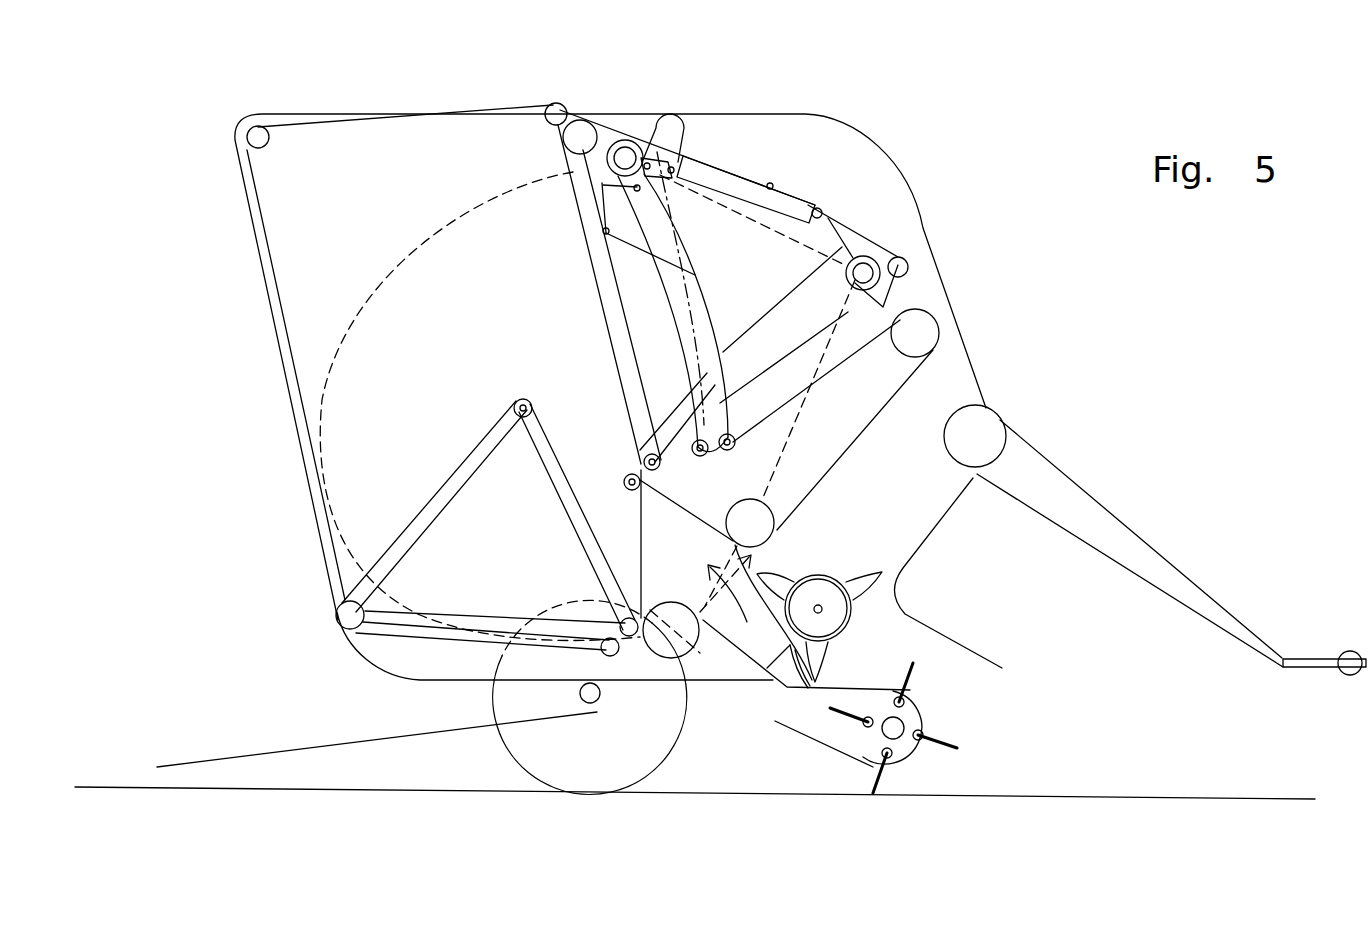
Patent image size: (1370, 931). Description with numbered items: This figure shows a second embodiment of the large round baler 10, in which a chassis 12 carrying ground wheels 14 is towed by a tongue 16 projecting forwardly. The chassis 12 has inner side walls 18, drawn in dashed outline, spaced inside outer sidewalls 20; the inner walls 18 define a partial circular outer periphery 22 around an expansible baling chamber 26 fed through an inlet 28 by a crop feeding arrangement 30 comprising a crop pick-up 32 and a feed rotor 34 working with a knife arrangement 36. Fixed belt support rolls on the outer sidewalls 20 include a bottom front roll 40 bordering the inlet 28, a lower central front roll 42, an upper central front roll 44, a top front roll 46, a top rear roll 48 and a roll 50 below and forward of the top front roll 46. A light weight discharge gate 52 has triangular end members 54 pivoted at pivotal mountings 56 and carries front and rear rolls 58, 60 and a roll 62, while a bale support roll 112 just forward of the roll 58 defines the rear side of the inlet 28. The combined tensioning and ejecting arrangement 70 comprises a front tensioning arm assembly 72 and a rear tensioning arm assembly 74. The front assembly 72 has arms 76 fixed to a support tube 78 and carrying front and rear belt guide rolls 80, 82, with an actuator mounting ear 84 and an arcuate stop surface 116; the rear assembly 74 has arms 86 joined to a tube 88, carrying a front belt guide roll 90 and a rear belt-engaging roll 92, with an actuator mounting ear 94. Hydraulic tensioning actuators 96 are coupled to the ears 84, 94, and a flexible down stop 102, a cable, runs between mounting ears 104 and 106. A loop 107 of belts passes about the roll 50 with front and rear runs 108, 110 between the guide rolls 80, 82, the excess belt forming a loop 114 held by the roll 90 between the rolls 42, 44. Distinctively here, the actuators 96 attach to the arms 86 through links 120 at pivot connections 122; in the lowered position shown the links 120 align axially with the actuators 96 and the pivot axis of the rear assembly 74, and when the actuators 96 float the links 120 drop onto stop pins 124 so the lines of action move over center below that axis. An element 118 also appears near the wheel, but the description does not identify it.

The large round baler 10 is at (1102, 342).
The chassis 12 is at (740, 683).
The ground wheels 14 is at (650, 760).
The tongue 16 is at (1090, 492).
The inner side walls 18 is at (776, 460).
The outer sidewalls 20 is at (863, 126).
The partial circular outer periphery 22 is at (365, 275).
The expansible baling chamber 26 is at (696, 579).
The crop inlet 28 is at (756, 612).
The crop feeding arrangement 30 is at (1000, 742).
The crop pick-up 32 is at (930, 705).
The feed rotor 34 is at (835, 577).
The knife arrangement 36 is at (810, 690).
The bottom front roll 40 is at (775, 522).
The lower central front roll 42 is at (930, 330).
The upper central front roll 44 is at (908, 265).
The top front roll 46 is at (553, 108).
The top rear roll 48 is at (258, 125).
The roll 50 is at (582, 125).
The light weight discharge gate 52 is at (470, 421).
The triangular end members 54 is at (453, 473).
The pivotal mountings 56 is at (520, 398).
The front roll 58 is at (636, 640).
The rear roll 60 is at (612, 660).
The roll 62 is at (343, 622).
The combined tensioning and ejecting arrangement 70 is at (800, 181).
The front tensioning arm assembly 72 is at (788, 285).
The rear tensioning arm assembly 74 is at (690, 325).
The arms 76 is at (789, 344).
The support tube 78 is at (866, 268).
The front belt guide roll 80 is at (655, 471).
The rear belt guide roll 82 is at (632, 490).
The actuator mounting ear 84 is at (830, 218).
The arms 86 is at (686, 221).
The tube 88 is at (625, 150).
The front belt guide roll 90 is at (730, 450).
The rear belt-engaging roll 92 is at (700, 457).
The actuator mounting ear 94 is at (655, 130).
The hydraulic tensioning actuators 96 is at (770, 180).
The elongate flexible down stop 102 is at (645, 258).
The mounting ear 104 is at (884, 303).
The mounting ear 106 is at (610, 198).
The loop 107 is at (590, 262).
The front run 108 is at (600, 296).
The rear run 110 is at (588, 233).
The bale support roll 112 is at (696, 658).
The loop 114 is at (832, 380).
The arcuate stop surface 116 is at (660, 423).
The ramp 118 is at (405, 740).
The links 120 is at (681, 158).
The pivot connections 122 is at (645, 160).
The stop pins 124 is at (603, 182).